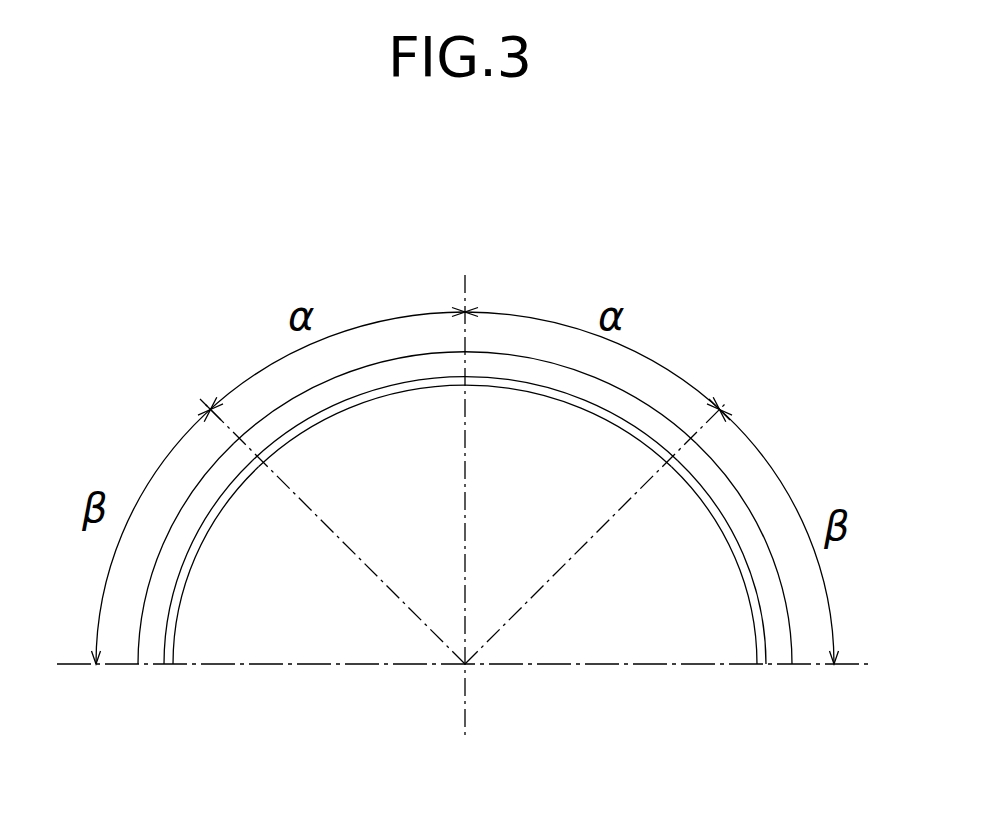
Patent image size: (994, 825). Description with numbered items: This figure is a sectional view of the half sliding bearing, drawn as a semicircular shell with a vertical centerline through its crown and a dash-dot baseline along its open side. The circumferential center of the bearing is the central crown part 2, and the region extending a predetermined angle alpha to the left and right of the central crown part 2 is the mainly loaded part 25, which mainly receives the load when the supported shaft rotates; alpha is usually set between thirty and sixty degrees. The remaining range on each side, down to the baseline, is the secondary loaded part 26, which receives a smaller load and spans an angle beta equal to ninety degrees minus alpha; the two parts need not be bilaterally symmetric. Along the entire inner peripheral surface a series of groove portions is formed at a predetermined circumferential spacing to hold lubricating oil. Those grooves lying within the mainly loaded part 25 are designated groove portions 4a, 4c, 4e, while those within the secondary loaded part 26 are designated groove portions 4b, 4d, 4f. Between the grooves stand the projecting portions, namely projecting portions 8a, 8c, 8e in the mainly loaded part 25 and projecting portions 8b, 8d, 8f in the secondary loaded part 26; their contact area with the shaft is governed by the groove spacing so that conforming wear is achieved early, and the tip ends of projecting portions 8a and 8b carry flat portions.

The central crown part 2 is at (463, 404).
The mainly loaded part 25 is at (412, 356).
The secondary loaded part 26 is at (204, 477).
The groove portion 4a is at (465, 451).
The groove portion 4c is at (465, 451).
The groove portion 4e is at (465, 451).
The projecting portion 8a is at (465, 451).
The projecting portion 8c is at (465, 451).
The projecting portion 8e is at (552, 400).
The groove portion 4b is at (465, 562).
The groove portion 4d is at (465, 562).
The groove portion 4f is at (465, 562).
The projecting portion 8b is at (465, 562).
The projecting portion 8d is at (465, 562).
The projecting portion 8f is at (203, 542).